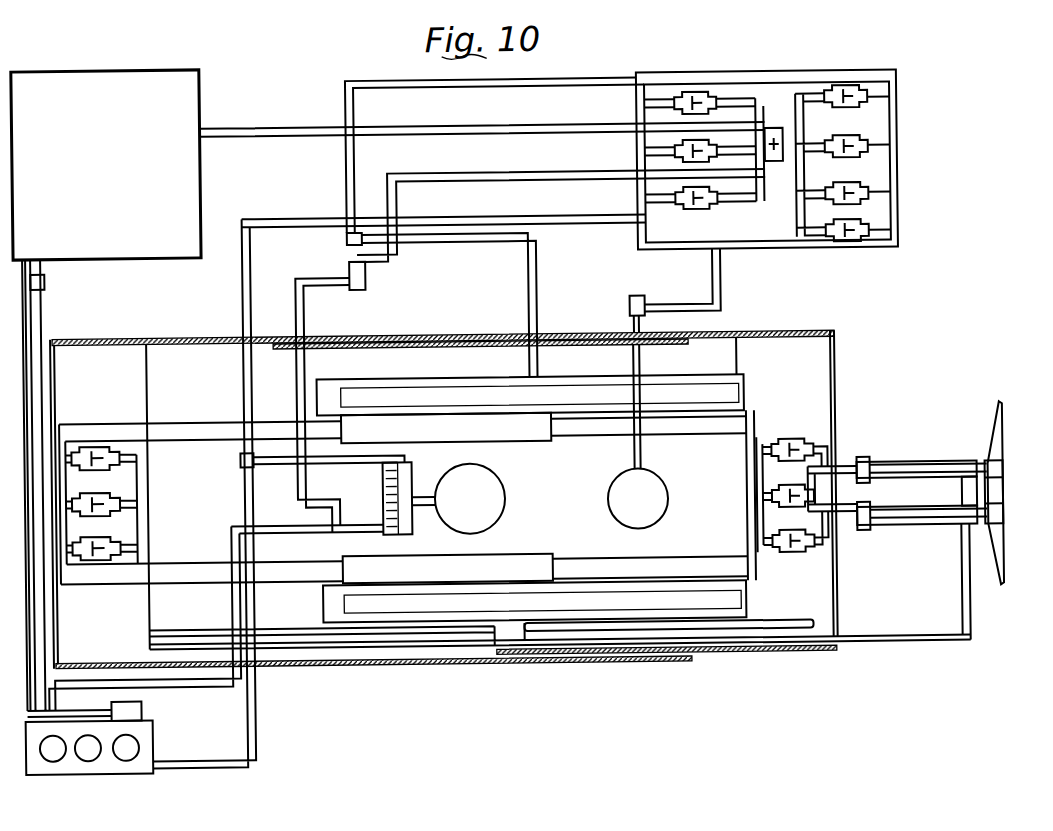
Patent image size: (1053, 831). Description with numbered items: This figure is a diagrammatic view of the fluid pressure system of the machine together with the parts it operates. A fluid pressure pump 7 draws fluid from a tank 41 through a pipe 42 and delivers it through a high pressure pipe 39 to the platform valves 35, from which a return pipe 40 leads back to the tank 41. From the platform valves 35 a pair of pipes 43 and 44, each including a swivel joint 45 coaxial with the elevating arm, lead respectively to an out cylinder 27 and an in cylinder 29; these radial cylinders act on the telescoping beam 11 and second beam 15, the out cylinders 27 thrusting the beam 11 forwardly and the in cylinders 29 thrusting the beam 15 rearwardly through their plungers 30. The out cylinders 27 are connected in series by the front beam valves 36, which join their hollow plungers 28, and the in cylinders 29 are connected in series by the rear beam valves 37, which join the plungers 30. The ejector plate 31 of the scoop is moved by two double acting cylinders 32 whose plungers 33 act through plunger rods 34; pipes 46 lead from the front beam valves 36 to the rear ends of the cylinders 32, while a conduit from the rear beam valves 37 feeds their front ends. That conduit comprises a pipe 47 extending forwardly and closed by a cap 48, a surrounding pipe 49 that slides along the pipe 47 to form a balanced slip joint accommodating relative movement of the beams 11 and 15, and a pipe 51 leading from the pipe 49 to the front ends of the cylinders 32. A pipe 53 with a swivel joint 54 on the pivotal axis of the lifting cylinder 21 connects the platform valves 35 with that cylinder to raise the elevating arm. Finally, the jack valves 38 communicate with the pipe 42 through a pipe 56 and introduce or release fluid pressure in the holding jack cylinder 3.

The cylinder 3 is at (504, 506).
The fluid pressure pump 7 is at (150, 745).
The beam 11 is at (808, 340).
The second beam 15 is at (206, 342).
The cylinder 21 is at (635, 526).
The out cylinders 27 is at (605, 414).
The hollow plungers 28 is at (718, 570).
The in cylinders 29 is at (543, 442).
The plungers 30 is at (206, 558).
The ejector plate 31 is at (1003, 446).
The double acting cylinders 32 is at (938, 466).
The plungers 33 is at (876, 487).
The plunger rods 34 is at (950, 480).
The platform valves 35 is at (888, 122).
The front beam valves 36 is at (788, 442).
The rear beam valves 37 is at (104, 440).
The jack valves 38 is at (383, 496).
The high pressure pipe 39 is at (258, 690).
The return pipe 40 is at (292, 125).
The tank 41 is at (183, 73).
The pipe 42 is at (48, 320).
The pipe 43 is at (535, 83).
The pipe 44 is at (454, 173).
The swivel joint 45 is at (350, 240).
The pipes 46 is at (846, 518).
The pipe 47 is at (702, 655).
The cap 48 is at (815, 627).
The pipe 49 is at (383, 665).
The pipe 51 is at (868, 646).
The pipe 53 is at (723, 281).
The swivel joint 54 is at (632, 302).
The pipe 56 is at (85, 680).